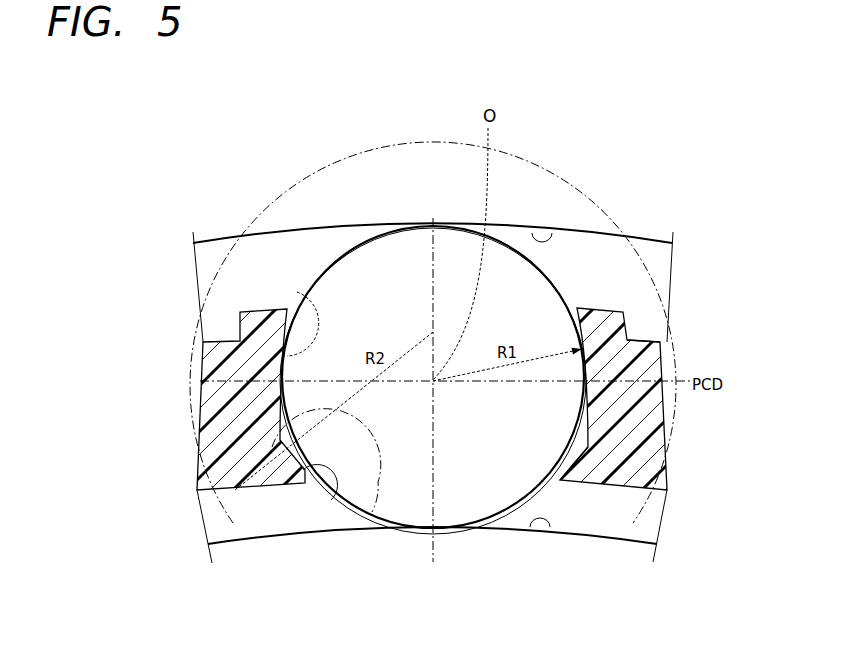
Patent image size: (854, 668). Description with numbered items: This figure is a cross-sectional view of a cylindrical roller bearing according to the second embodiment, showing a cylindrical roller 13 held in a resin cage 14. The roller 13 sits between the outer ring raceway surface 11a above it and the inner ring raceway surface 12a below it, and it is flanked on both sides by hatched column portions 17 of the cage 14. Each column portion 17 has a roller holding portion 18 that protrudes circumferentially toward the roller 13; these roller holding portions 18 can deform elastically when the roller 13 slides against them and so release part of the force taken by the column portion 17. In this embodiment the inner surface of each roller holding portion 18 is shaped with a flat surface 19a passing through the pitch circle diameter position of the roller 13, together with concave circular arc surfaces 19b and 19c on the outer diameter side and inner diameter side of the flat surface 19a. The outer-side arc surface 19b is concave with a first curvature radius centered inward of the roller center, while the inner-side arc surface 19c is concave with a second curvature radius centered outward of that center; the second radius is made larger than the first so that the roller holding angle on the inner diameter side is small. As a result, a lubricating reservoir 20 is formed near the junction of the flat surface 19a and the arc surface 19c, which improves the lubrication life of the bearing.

The outer ring raceway surface 11a is at (550, 228).
The inner ring raceway surface 12a is at (531, 528).
The cylindrical roller 13 is at (347, 247).
The resin cage 14 is at (640, 330).
The column portion 17 is at (272, 460).
The roller holding portion 18 is at (276, 305).
The flat surface 19a is at (370, 478).
The circular arc surface on the outer diameter side 19b is at (240, 340).
The circular arc surface on the inner diameter side 19c is at (331, 500).
The lubricating reservoir 20 is at (573, 478).